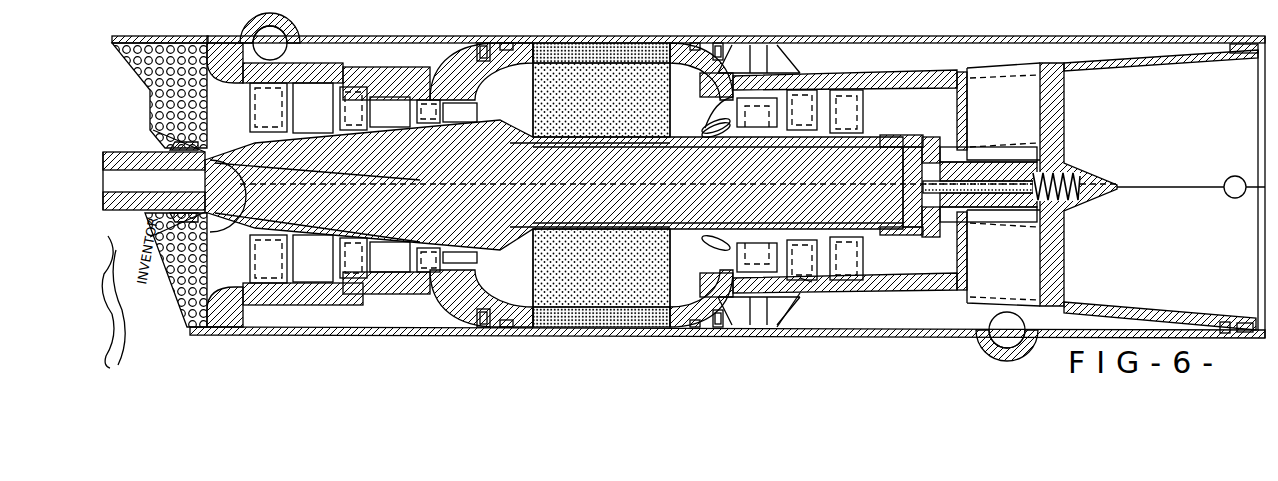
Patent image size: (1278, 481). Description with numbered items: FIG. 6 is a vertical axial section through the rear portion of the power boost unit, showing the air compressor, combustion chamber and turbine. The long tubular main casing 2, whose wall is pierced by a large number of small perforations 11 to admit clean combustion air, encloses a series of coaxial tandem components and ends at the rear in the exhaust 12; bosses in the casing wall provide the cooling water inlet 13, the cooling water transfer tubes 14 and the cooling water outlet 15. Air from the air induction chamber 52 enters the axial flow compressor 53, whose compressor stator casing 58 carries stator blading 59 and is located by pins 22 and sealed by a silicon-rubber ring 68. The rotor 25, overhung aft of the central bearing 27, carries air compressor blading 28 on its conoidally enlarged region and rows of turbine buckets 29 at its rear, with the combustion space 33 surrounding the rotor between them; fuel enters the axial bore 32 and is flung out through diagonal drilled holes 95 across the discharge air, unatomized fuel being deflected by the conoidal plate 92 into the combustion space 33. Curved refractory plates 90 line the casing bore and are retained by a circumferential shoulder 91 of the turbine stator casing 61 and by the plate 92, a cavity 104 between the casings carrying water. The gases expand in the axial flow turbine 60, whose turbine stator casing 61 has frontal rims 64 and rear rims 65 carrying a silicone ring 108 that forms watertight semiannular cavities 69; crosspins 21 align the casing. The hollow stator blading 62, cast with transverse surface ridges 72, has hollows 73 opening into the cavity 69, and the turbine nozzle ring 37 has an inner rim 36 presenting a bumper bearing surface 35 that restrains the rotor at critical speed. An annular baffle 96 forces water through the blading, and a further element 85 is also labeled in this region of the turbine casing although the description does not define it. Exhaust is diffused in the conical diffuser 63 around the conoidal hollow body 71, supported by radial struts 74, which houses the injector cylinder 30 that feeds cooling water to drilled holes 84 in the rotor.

The main casing 2 is at (1229, 44).
The perforations 11 is at (119, 36).
The exhaust 12 is at (1263, 118).
The cooling water inlet 13 is at (1012, 349).
The cooling water transfer tubes 14 is at (714, 328).
The cooling water outlet 15 is at (277, 27).
The crosspins 21 is at (1236, 176).
The pins 22 is at (243, 233).
The rotor 25 is at (170, 150).
The central bearing 27 is at (204, 146).
The air compressor blading 28 is at (323, 263).
The turbine buckets 29 is at (860, 270).
The injector cylinder 30 is at (975, 163).
The axial bore 32 is at (160, 193).
The combustion space 33 is at (570, 260).
The bumper bearing surface 35 is at (700, 133).
The inner rim 36 is at (705, 126).
The turbine nozzle ring 37 is at (718, 115).
The air induction chamber 52 is at (140, 68).
The axial flow compressor 53 is at (310, 321).
The compressor stator casing 58 is at (318, 296).
The stator blading 59 is at (360, 270).
The axial flow turbine 60 is at (850, 291).
The turbine stator casing 61 is at (863, 292).
The stator blading 62 is at (810, 265).
The conical diffuser 63 is at (1123, 255).
The frontal rims 64 is at (683, 333).
The rear rims 65 is at (1220, 322).
The silicon-rubber ring 68 is at (480, 334).
The semiannular cavities 69 is at (920, 325).
The conoidal hollow body 71 is at (1078, 172).
The transverse surface ridges 72 is at (782, 277).
The hollows 73 is at (800, 278).
The radial struts 74 is at (1025, 108).
The drilled holes 84 is at (881, 147).
The bearing block 85 is at (855, 262).
The refractory plates 90 is at (577, 124).
The circumferential shoulder 91 is at (673, 43).
The conoidal plate 92 is at (520, 269).
The drilled holes 95 is at (206, 185).
The annular baffle 96 is at (790, 323).
The cavity 104 is at (428, 66).
The silicone ring 108 is at (705, 336).